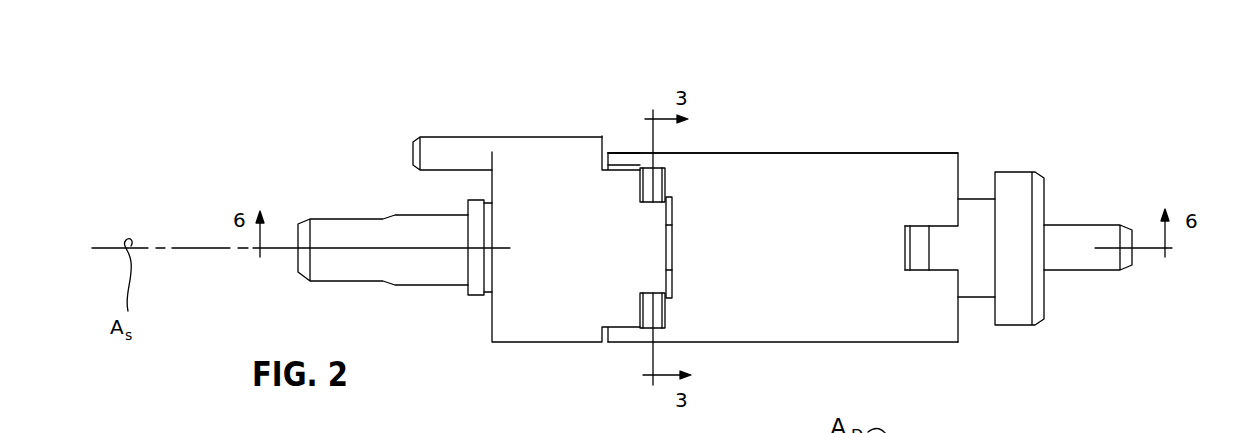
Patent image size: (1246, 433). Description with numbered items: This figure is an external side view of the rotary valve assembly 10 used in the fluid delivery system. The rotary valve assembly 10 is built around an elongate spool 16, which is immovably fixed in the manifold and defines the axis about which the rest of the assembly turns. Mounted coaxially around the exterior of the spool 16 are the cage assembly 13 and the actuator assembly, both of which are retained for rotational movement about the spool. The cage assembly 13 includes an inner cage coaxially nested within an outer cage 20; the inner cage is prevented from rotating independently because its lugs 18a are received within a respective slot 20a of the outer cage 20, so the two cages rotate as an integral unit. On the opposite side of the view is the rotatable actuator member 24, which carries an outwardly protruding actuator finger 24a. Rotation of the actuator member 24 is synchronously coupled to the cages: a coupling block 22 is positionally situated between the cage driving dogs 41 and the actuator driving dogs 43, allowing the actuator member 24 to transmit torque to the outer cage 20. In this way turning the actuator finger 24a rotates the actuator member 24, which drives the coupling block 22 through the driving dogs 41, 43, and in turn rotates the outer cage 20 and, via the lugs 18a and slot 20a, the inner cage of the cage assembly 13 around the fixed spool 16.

The rotary valve assembly 10 is at (872, 115).
The cage assembly 13 is at (767, 152).
The spool 16 is at (973, 282).
The lugs 18a is at (922, 237).
The outer cage 20 is at (790, 245).
The slot 20a is at (947, 268).
The coupling block 22 is at (648, 187).
The actuator member 24 is at (578, 253).
The actuator finger 24a is at (448, 150).
The cage driving dogs 41 is at (615, 160).
The actuator driving dogs 43 is at (657, 240).